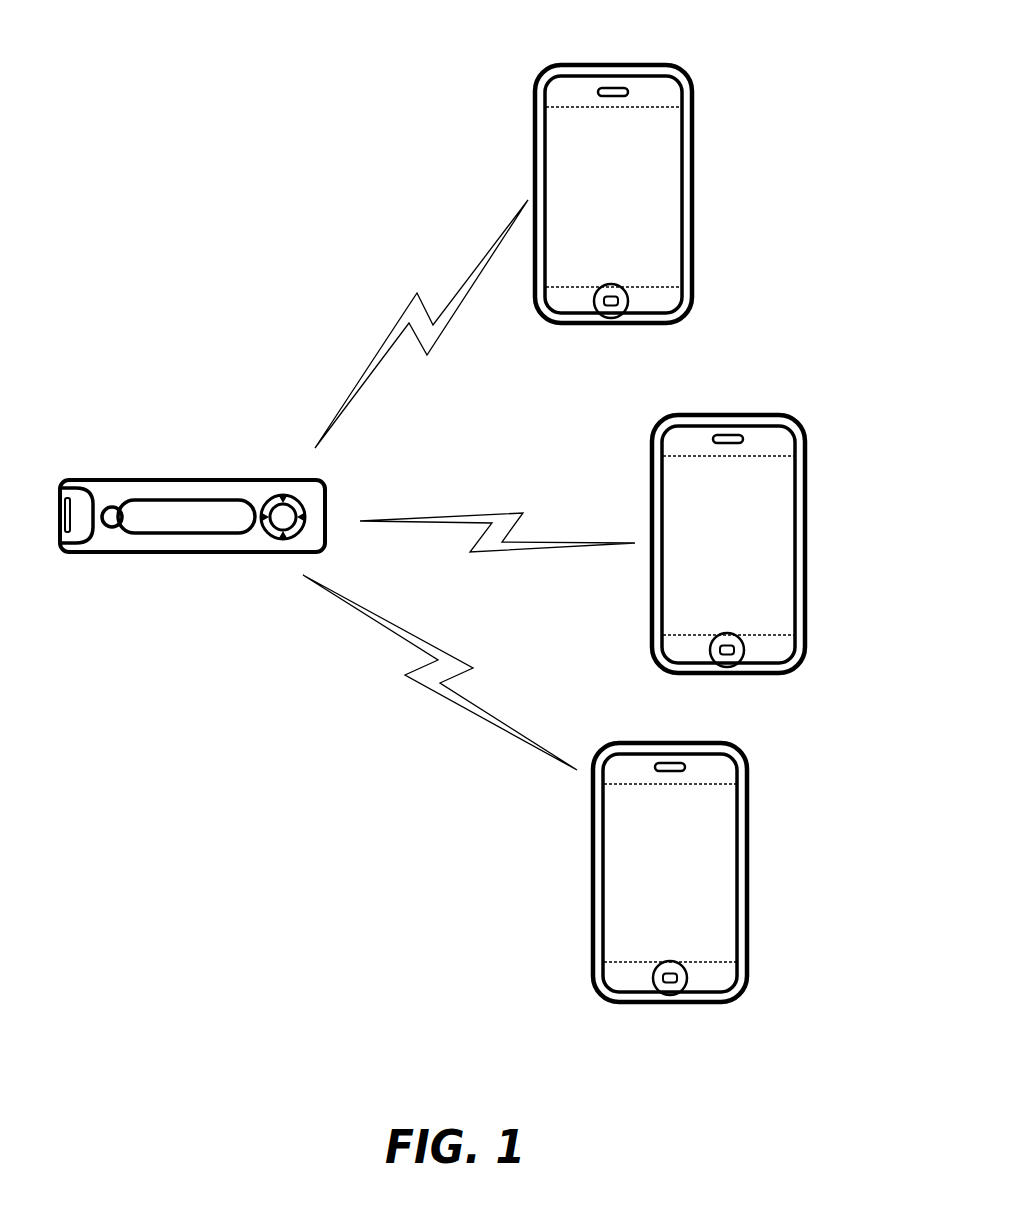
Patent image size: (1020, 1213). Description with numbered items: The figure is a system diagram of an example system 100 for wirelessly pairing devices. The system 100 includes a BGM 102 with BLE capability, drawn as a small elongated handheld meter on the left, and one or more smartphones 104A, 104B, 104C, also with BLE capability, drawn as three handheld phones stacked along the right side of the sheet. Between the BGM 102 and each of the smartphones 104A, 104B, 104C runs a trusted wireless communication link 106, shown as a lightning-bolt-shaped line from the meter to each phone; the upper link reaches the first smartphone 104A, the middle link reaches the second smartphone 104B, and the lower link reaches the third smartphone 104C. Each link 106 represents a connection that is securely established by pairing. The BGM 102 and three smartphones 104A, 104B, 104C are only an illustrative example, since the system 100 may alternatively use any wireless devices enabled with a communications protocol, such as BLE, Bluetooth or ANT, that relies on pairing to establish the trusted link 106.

The system 100 is at (205, 78).
The BGM 102 is at (210, 480).
The smartphone 104A is at (692, 256).
The smartphone 104B is at (805, 619).
The smartphone 104C is at (747, 925).
The trusted wireless communication link 106 is at (437, 340).